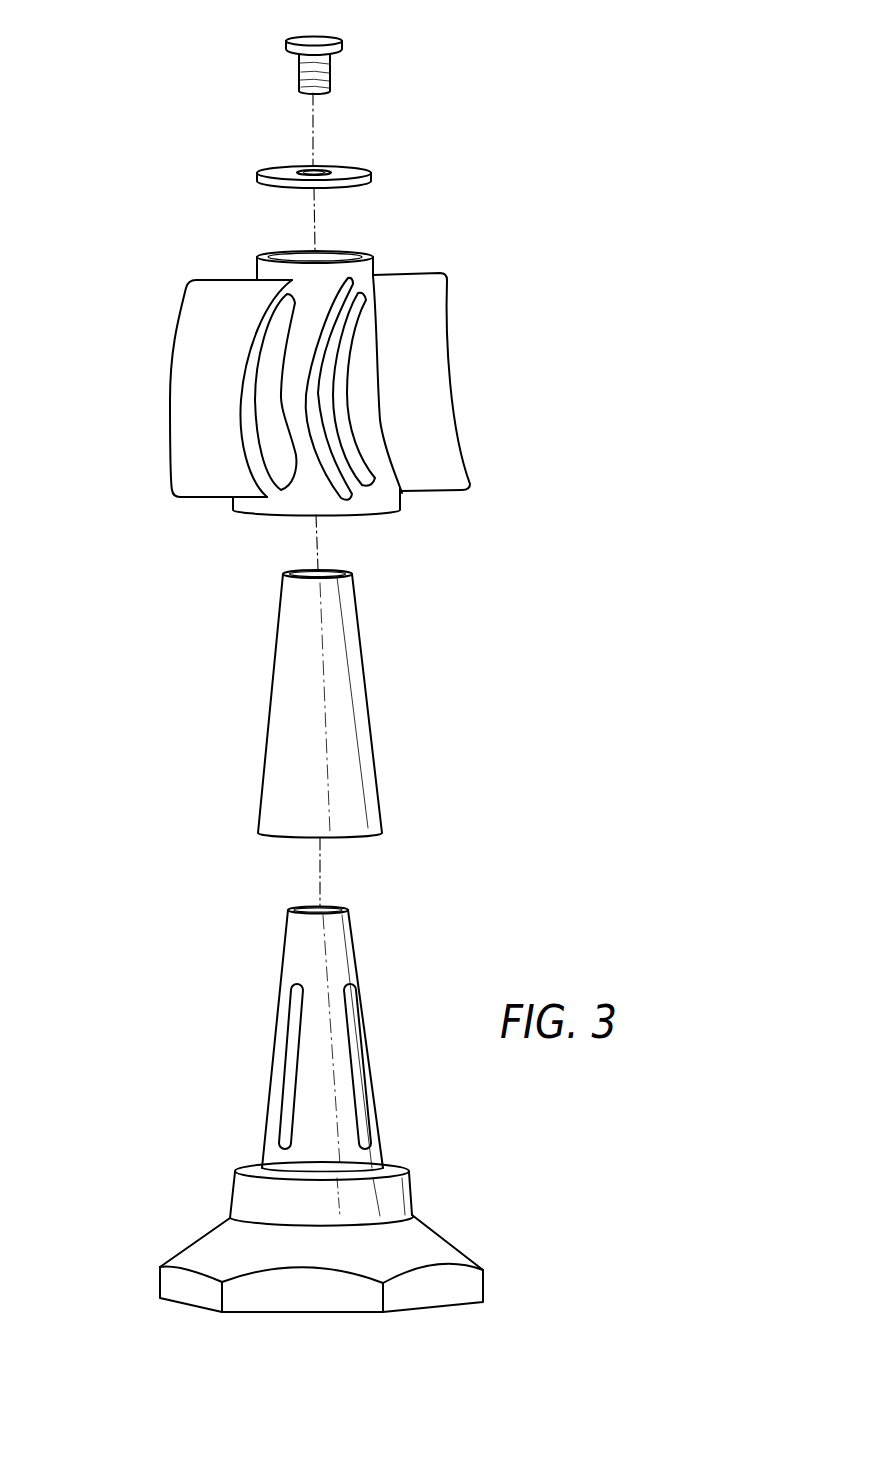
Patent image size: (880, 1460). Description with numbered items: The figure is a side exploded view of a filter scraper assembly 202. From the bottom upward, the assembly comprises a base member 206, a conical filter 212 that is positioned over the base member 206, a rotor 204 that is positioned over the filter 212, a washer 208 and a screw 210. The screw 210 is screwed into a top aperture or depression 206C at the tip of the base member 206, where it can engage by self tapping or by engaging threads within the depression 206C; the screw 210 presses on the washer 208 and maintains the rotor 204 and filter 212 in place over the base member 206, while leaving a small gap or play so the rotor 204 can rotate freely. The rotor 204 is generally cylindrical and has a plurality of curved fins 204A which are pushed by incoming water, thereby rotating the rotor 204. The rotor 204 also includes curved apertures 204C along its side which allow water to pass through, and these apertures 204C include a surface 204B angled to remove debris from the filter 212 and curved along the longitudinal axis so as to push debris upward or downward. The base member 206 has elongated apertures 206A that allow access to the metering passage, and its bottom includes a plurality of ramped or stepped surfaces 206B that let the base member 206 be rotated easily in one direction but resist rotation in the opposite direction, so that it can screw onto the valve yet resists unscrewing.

The scraper assembly 202 is at (123, 598).
The rotor 204 is at (366, 394).
The curved fins 204A is at (467, 468).
The surface 204B is at (342, 373).
The curved apertures 204C is at (323, 430).
The base member 206 is at (284, 1113).
The elongated apertures 206A is at (287, 1105).
The stepped surfaces 206B is at (222, 1312).
The depression 206C is at (322, 910).
The washer 208 is at (352, 165).
The screw 210 is at (328, 37).
The filter 212 is at (363, 762).